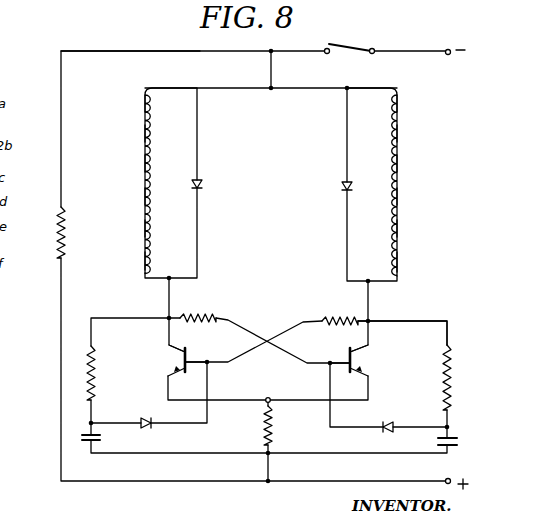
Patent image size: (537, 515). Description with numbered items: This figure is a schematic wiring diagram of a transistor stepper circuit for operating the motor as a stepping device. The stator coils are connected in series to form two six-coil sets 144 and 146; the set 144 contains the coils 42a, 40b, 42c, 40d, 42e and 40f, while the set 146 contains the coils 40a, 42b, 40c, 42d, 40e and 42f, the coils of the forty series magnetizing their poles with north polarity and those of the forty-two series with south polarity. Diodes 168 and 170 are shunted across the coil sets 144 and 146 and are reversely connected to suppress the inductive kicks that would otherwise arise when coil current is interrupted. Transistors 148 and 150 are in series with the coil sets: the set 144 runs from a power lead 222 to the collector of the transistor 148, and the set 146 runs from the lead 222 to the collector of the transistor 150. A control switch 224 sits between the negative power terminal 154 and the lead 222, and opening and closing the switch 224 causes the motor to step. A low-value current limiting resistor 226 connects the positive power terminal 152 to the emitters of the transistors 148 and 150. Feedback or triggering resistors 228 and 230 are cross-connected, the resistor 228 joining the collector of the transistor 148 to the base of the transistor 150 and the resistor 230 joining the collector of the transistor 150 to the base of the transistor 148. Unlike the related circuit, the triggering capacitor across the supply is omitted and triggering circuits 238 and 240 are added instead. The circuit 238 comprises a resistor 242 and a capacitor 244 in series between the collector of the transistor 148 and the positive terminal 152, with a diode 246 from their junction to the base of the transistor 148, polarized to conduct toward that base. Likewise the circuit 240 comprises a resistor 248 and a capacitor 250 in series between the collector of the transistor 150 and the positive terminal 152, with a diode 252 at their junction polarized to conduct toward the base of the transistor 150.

The power lead 222 is at (141, 50).
The control switch 224 is at (350, 44).
The negative power terminal 154 is at (448, 49).
The six-coil set 144 is at (132, 97).
The six-coil set 146 is at (413, 94).
The coil 42a is at (152, 104).
The coil 40b is at (152, 135).
The coil 42c is at (152, 166).
The coil 40d is at (152, 200).
The coil 42e is at (152, 232).
The coil 40f is at (152, 263).
The coil 40a is at (401, 107).
The coil 42b is at (401, 139).
The coil 40c is at (401, 170).
The coil 42d is at (401, 201).
The coil 40e is at (401, 233).
The coil 42f is at (401, 264).
The diode 168 is at (203, 186).
The diode 170 is at (341, 189).
The triggering circuit 238 is at (85, 310).
The feedback or triggering resistor 228 is at (197, 315).
The feedback or triggering resistor 230 is at (340, 316).
The triggering circuit 240 is at (449, 318).
The transistor 148 is at (163, 361).
The transistor 150 is at (363, 364).
The resistor 242 is at (97, 378).
The resistor 248 is at (453, 370).
The current limiting resistor 226 is at (275, 440).
The capacitor 244 is at (80, 437).
The diode 246 is at (148, 430).
The diode 252 is at (390, 420).
The capacitor 250 is at (456, 445).
The positive power terminal 152 is at (451, 480).